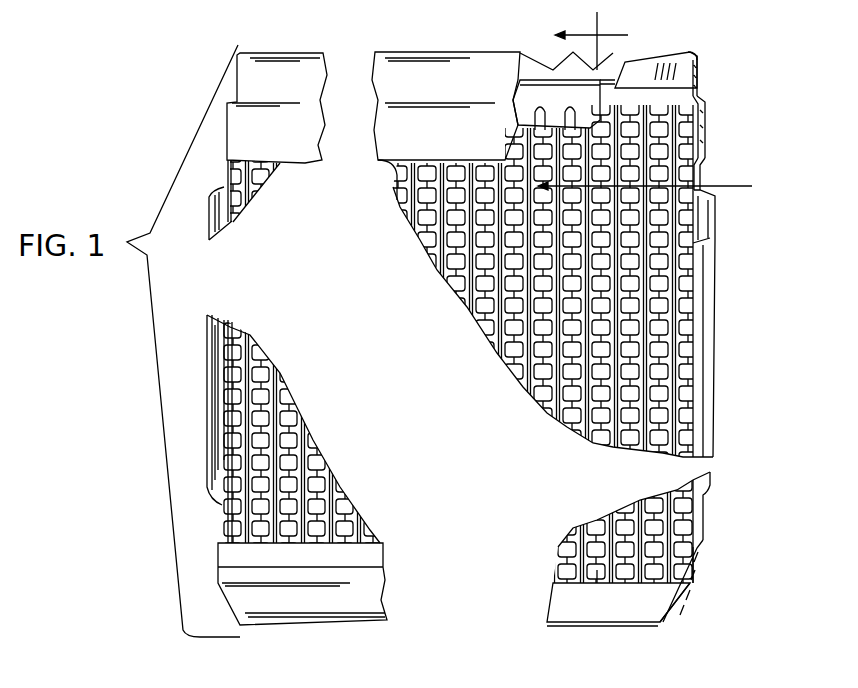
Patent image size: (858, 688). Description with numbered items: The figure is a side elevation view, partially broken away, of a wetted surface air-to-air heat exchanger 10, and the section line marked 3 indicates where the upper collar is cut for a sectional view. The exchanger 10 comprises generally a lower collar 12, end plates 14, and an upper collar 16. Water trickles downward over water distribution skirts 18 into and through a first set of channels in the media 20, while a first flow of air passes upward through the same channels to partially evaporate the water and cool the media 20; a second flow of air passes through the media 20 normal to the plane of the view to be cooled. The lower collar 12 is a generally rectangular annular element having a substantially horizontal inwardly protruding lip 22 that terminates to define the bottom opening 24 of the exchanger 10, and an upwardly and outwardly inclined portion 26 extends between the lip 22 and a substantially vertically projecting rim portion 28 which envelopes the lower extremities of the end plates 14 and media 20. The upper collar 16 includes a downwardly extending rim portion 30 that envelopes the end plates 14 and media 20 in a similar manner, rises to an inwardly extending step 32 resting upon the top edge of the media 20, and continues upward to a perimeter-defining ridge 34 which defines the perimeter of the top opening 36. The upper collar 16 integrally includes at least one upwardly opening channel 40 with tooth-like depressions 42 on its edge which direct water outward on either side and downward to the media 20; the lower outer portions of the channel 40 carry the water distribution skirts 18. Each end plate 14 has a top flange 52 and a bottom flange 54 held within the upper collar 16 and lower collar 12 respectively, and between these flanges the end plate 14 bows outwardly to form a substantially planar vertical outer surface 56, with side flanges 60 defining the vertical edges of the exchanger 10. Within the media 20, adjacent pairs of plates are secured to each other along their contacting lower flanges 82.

The wetted surface air-to-air heat exchanger 10 is at (740, 322).
The lower collar 12 is at (237, 602).
The end plates 14 is at (703, 398).
The upper collar 16 is at (700, 80).
The water distribution skirts 18 is at (527, 92).
The media 20 is at (693, 215).
The lip 22 is at (662, 622).
The bottom opening 24 is at (620, 626).
The inclined portion 26 is at (680, 600).
The rim portion 28 is at (695, 567).
The rim portion 30 is at (705, 137).
The step 32 is at (705, 98).
The perimeter-defining ridge 34 is at (698, 54).
The top opening 36 is at (453, 72).
The channel 40 is at (620, 67).
The tooth-like depressions 42 is at (555, 62).
The top flange 52 is at (705, 170).
The bottom flange 54 is at (695, 523).
The outer surface 56 is at (207, 400).
The side flanges 60 is at (223, 347).
The lower flanges 82 is at (597, 583).
The section line 3- 3 is at (654, 105).